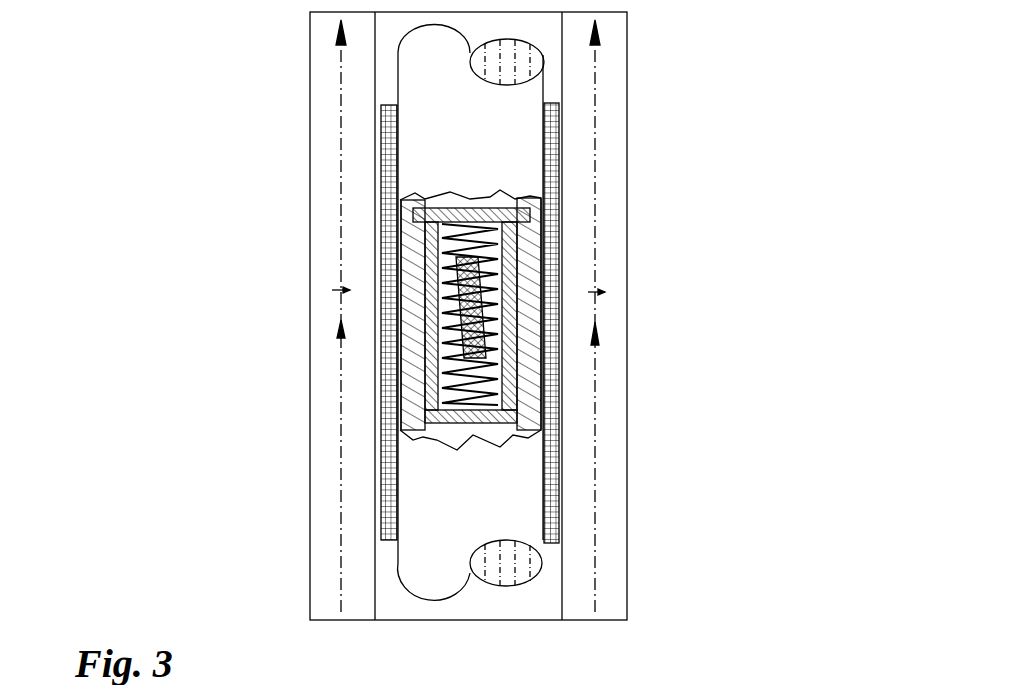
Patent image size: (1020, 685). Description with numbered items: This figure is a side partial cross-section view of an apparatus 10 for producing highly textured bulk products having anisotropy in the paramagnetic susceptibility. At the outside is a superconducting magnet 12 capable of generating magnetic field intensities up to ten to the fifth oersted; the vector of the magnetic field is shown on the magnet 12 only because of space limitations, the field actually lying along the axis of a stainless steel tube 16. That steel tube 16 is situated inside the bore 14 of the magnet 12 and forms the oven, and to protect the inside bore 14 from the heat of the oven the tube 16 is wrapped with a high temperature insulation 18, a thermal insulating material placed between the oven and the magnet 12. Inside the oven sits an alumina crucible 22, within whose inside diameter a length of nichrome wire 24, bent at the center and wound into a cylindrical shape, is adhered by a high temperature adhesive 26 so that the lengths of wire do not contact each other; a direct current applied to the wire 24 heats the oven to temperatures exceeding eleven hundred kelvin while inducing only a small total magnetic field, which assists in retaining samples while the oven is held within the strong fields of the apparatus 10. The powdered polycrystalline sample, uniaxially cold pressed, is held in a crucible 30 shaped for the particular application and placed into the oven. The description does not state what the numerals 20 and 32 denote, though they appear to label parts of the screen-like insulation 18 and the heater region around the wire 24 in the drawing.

The apparatus 10 is at (775, 150).
The superconducting magnet 12 is at (601, 268).
The bore 14 is at (472, 600).
The stainless steel tube 16 is at (503, 478).
The high temperature insulation 18 is at (558, 437).
The left screen 20 is at (399, 237).
The alumina crucible 22 is at (515, 217).
The nichrome wire 24 is at (507, 230).
The high temperature adhesive 26 is at (488, 398).
The crucible 30 is at (445, 352).
The stop member 32 is at (455, 312).